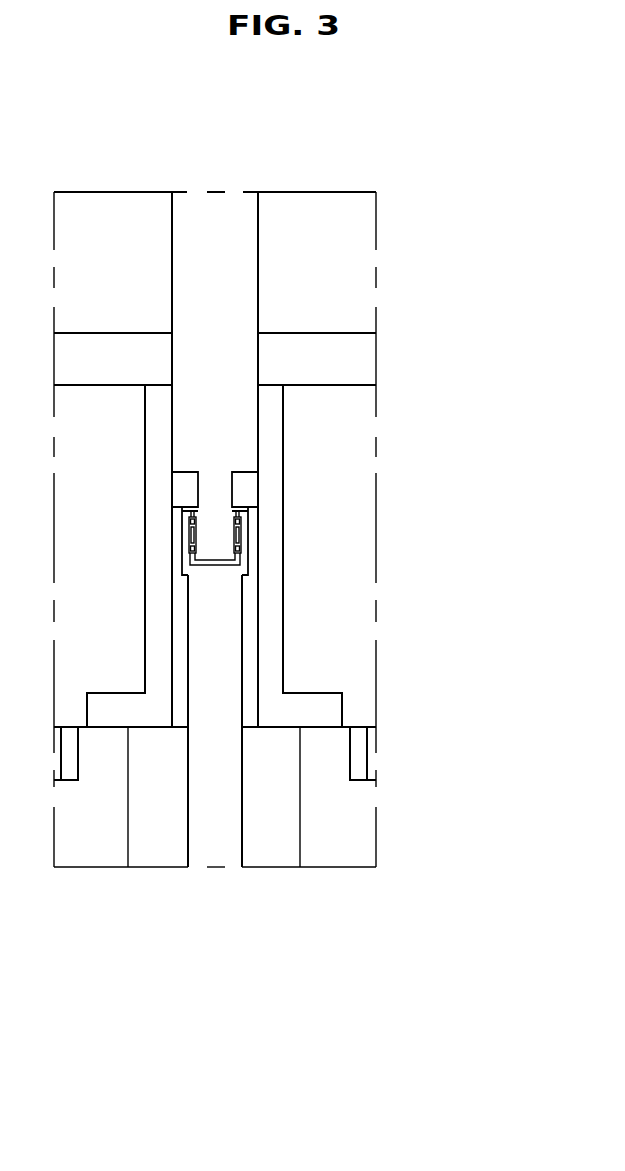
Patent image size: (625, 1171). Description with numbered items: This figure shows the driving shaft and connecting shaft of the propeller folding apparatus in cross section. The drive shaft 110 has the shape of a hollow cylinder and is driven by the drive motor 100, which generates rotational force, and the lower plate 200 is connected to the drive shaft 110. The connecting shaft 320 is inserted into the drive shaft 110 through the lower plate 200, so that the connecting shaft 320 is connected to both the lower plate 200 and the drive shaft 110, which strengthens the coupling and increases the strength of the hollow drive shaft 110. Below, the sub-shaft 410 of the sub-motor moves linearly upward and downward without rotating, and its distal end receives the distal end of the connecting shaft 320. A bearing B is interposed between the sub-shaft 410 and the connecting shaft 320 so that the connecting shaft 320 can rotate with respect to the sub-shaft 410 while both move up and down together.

The connecting shaft 320 is at (212, 213).
The lower plate 200 is at (357, 361).
The drive shaft 110 is at (270, 632).
The bearing B is at (236, 520).
The drive motor 100 is at (350, 830).
The sub-shaft 410 is at (222, 770).